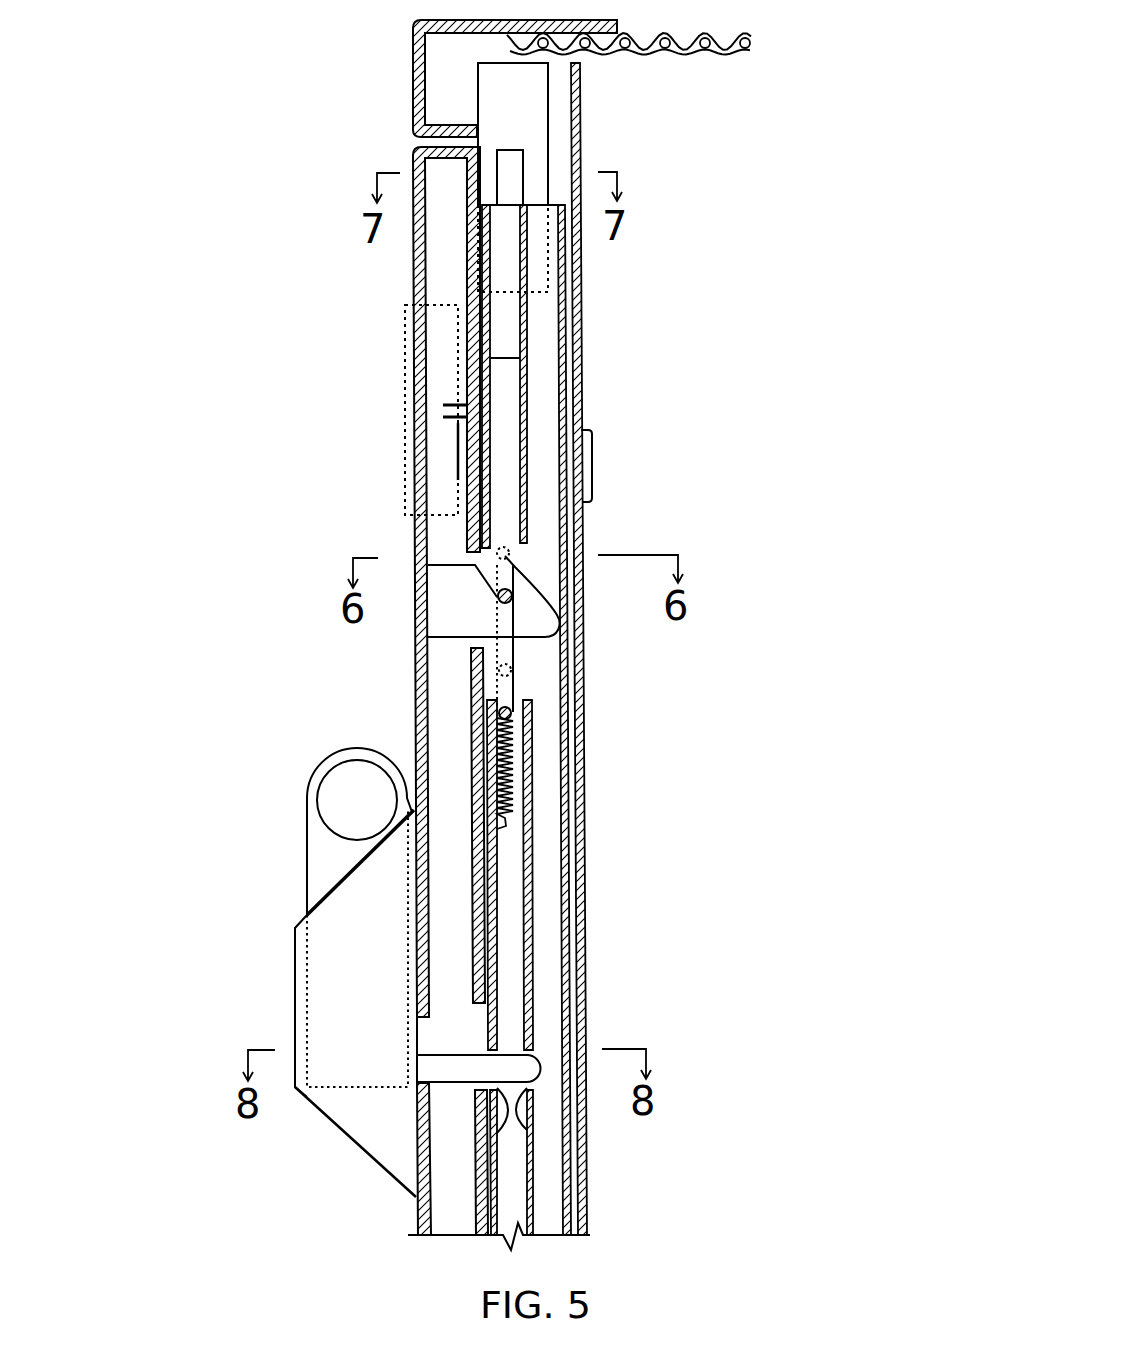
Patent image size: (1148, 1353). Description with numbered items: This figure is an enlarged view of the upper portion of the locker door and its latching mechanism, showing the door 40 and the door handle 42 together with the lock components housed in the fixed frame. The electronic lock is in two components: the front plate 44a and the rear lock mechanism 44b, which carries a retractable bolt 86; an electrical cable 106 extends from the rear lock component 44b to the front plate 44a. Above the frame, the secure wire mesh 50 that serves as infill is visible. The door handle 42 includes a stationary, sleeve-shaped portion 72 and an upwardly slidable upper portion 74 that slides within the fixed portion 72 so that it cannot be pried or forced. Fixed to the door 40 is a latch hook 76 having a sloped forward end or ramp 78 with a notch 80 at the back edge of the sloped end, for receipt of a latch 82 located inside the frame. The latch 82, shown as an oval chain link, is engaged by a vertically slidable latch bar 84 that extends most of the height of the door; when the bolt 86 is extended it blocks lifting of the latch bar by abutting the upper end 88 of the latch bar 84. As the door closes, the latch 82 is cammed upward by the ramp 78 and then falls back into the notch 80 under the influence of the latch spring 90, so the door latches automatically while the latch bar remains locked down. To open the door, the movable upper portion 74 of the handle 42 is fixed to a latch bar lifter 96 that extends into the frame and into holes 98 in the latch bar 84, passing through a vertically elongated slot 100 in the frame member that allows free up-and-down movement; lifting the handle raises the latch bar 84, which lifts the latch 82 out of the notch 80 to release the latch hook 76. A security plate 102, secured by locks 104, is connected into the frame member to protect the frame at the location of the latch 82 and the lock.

The door 40 is at (413, 248).
The door handle 42 is at (248, 1011).
The front plate 44a is at (413, 340).
The lock mechanism 44b is at (477, 107).
The wire mesh 50 is at (712, 50).
The stationary portion 72 is at (292, 952).
The upper portion 74 is at (303, 830).
The latch hook 76 is at (542, 660).
The ramp 78 is at (543, 590).
The notch 80 is at (508, 572).
The latch 82 is at (500, 549).
The latch bar 84 is at (533, 925).
The retractable bolt 86 is at (522, 173).
The upper end of the latch bar 88 is at (520, 208).
The latch spring 90 is at (510, 775).
The latch bar lifter 96 is at (545, 1075).
The holes 98 is at (518, 1125).
The slot 100 is at (475, 1023).
The security plate 102 is at (587, 988).
The locks 104 is at (592, 450).
The electrical cable 106 is at (462, 416).